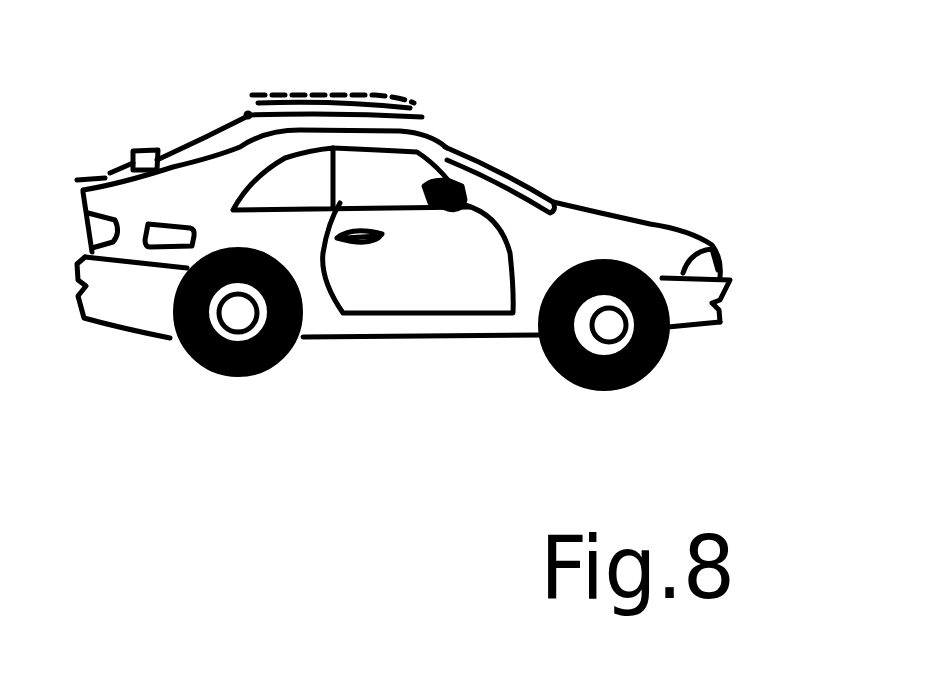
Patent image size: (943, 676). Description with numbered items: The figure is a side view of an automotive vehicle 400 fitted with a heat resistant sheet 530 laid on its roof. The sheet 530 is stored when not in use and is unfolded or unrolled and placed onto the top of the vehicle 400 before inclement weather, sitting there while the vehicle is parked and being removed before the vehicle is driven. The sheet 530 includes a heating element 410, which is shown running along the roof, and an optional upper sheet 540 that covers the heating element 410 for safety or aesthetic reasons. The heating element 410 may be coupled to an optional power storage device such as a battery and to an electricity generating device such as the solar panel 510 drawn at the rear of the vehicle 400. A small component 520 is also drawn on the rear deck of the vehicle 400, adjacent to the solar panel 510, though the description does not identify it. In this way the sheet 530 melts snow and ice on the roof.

The vehicle 400 is at (537, 405).
The heating element 410 is at (440, 103).
The solar panel 510 is at (103, 178).
The sensor module 520 is at (146, 150).
The heat resistant sheet 530 is at (440, 130).
The upper sheet 540 is at (390, 100).